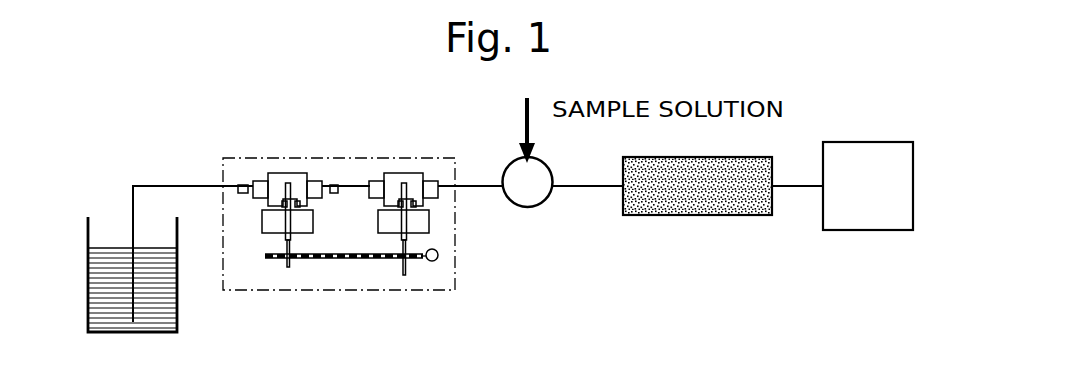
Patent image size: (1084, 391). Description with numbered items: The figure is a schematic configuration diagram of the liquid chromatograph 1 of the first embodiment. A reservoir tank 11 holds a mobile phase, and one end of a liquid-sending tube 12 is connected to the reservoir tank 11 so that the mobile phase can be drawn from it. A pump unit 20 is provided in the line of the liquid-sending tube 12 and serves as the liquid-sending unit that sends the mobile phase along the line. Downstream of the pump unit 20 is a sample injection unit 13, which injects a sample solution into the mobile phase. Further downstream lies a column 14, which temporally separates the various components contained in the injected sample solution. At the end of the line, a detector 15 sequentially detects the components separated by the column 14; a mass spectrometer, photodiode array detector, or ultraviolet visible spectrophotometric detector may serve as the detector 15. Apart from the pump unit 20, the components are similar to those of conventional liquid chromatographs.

The liquid chromatograph 1 is at (860, 293).
The reservoir tank 11 is at (167, 310).
The liquid-sending tube 12 is at (188, 183).
The sample injection unit 13 is at (538, 195).
The column 14 is at (713, 195).
The detector 15 is at (851, 192).
The pump unit 20 is at (455, 290).